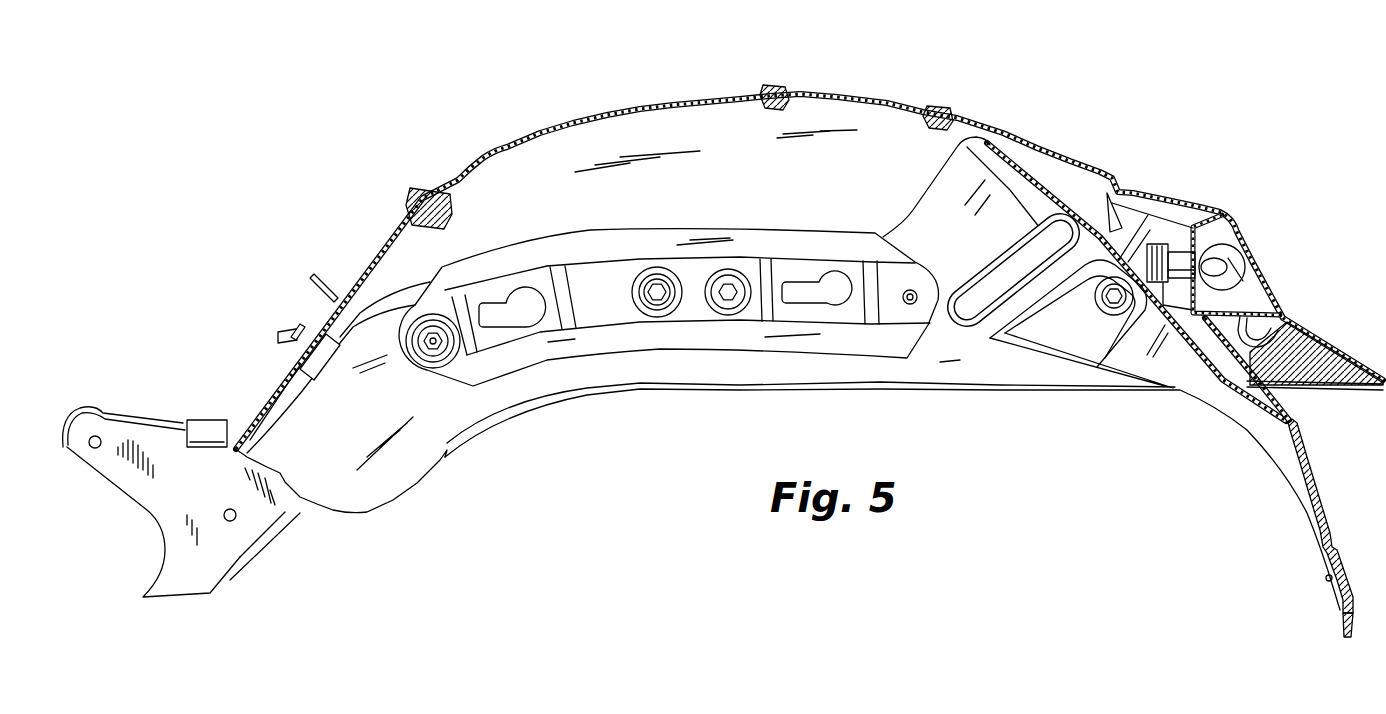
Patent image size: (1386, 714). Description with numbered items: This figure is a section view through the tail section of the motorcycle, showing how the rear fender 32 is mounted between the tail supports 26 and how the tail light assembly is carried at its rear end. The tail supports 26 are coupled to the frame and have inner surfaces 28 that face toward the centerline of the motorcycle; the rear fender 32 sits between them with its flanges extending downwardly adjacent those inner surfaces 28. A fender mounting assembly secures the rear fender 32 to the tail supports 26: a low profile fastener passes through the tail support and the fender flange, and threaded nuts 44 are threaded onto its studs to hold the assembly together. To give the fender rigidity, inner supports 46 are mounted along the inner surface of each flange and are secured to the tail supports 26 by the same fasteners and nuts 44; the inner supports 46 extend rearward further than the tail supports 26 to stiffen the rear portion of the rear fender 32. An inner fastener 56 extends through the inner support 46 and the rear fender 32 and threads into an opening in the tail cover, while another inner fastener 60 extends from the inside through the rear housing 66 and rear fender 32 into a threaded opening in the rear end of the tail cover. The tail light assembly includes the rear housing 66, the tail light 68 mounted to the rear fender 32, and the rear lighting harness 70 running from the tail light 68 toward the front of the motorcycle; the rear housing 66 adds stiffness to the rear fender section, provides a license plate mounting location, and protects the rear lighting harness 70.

The tail support 26 is at (212, 572).
The inner surface 28 is at (283, 503).
The rear fender 32 is at (733, 97).
The threaded nut 44 is at (656, 287).
The inner support 46 is at (697, 342).
The inner fastener 56 is at (728, 287).
The inner fastener 60 is at (1110, 314).
The rear housing 66 is at (1063, 182).
The tail light 68 is at (1223, 213).
The rear lighting harness 70 is at (423, 272).